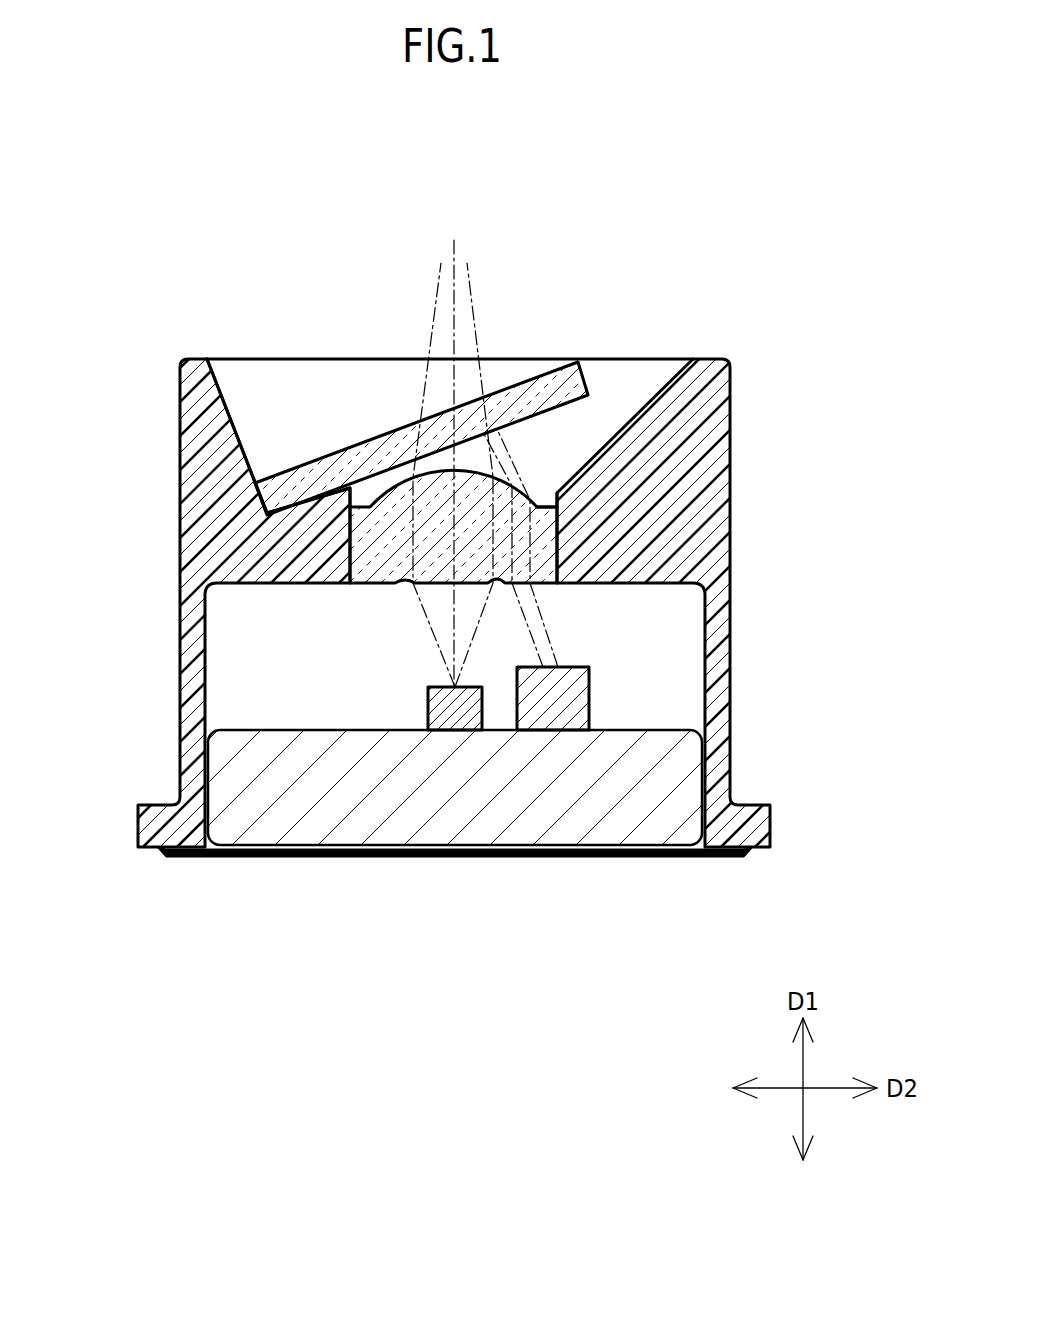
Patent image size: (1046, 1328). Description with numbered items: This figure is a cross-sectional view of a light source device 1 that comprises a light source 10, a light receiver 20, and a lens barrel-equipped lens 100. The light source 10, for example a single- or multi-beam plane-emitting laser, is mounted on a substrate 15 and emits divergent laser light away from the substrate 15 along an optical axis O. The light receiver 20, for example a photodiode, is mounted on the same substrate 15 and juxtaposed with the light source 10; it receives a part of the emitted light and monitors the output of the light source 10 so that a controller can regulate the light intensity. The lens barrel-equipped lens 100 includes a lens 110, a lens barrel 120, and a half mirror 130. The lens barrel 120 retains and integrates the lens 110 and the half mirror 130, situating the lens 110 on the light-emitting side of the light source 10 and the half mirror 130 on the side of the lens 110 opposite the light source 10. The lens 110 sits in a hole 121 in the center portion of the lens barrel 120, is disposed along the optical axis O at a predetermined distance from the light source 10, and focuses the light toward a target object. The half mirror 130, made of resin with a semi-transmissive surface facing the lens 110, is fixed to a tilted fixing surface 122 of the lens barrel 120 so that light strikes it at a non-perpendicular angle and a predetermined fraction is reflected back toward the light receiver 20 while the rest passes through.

The light source device 1 is at (462, 525).
The lens barrel-equipped lens 100 is at (462, 563).
The lens 110 is at (387, 543).
The lens barrel 120 is at (730, 508).
The hole 121 is at (545, 497).
The fixing surface 122 is at (303, 499).
The half mirror 130 is at (326, 463).
The light source 10 is at (455, 713).
The substrate 15 is at (338, 823).
The light receiver 20 is at (553, 705).
The optical axis O is at (454, 240).